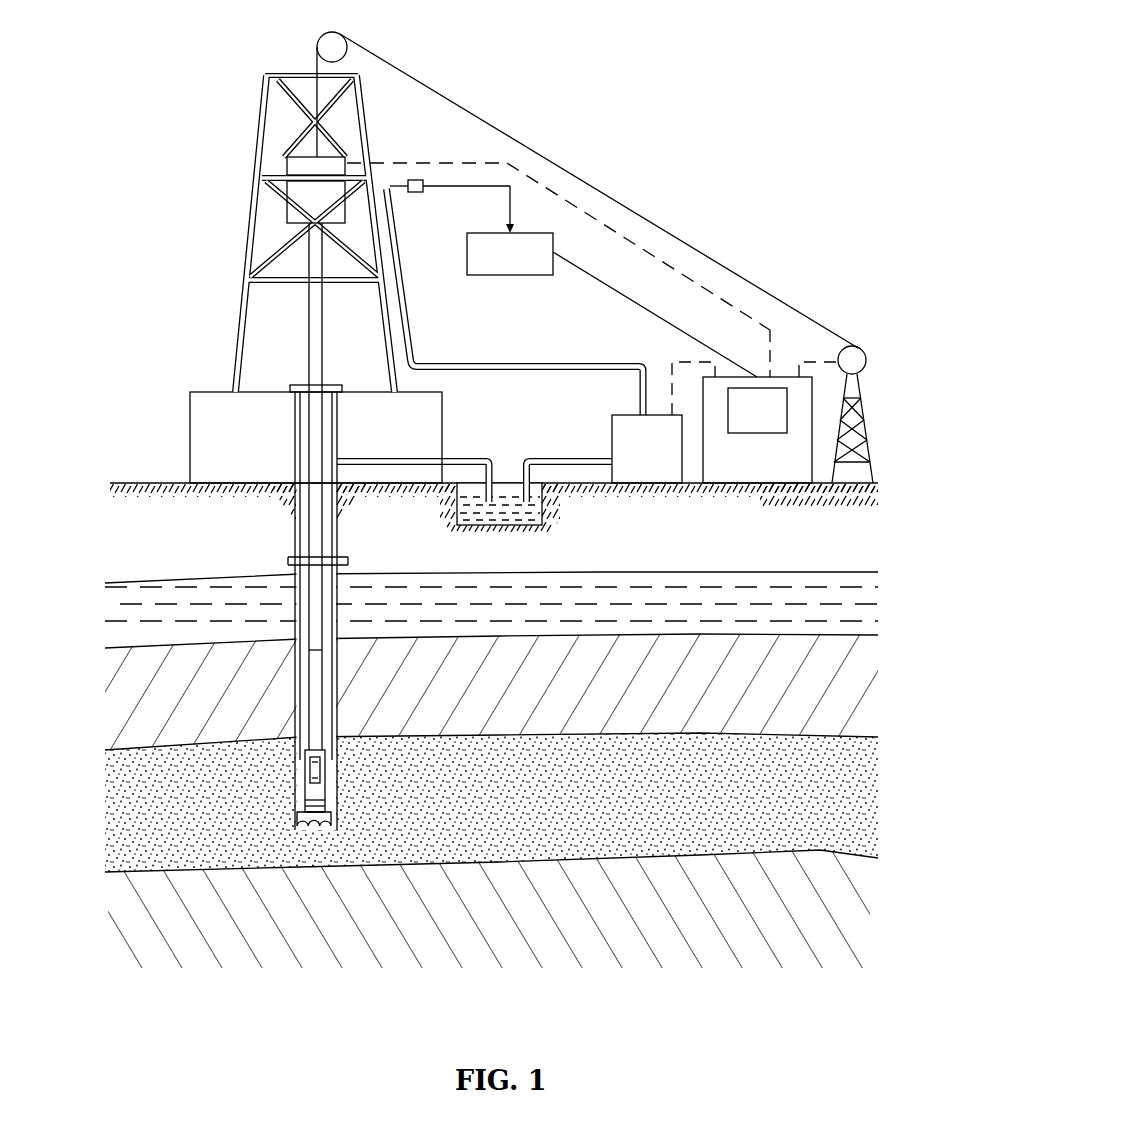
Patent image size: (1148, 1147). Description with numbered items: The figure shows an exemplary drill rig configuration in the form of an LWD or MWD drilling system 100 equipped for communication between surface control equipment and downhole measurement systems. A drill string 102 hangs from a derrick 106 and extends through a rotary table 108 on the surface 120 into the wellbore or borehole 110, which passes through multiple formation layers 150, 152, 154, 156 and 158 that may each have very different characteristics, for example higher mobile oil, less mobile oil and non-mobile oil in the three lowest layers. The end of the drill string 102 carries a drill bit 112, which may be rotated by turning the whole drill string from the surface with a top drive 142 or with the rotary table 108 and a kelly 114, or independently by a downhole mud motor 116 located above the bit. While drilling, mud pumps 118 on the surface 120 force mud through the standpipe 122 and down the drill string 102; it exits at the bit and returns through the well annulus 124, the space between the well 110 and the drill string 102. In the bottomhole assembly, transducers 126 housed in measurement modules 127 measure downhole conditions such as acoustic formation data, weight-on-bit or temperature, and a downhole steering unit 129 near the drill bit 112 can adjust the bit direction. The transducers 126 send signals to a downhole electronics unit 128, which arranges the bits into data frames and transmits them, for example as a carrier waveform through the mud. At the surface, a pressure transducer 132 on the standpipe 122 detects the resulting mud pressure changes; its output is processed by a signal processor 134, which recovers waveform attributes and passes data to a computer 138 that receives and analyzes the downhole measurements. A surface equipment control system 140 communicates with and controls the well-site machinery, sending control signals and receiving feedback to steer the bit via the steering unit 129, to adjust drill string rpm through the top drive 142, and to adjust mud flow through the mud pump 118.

The drilling system 100 is at (283, 66).
The drill string 102 is at (300, 538).
The derrick 106 is at (246, 283).
The rotary table 108 is at (338, 386).
The borehole 110 is at (337, 538).
The drill bit 112 is at (305, 833).
The kelly 114 is at (308, 341).
The downhole mud motor 116 is at (326, 800).
The mud pumps 118 is at (666, 458).
The surface 120 is at (175, 490).
The standpipe 122 is at (574, 361).
The well annulus 124 is at (307, 623).
The transducers 126 is at (302, 771).
The measurement modules 127 is at (329, 779).
The downhole electronics unit 128 is at (312, 708).
The downhole steering unit 129 is at (310, 807).
The pressure transducer 132 is at (419, 193).
The signal processor 134 is at (529, 264).
The computer 138 is at (776, 420).
The surface equipment control system 140 is at (778, 471).
The top drive 142 is at (333, 205).
The formation layer 150 is at (840, 558).
The formation layer 152 is at (840, 626).
The formation layer 154 is at (840, 723).
The formation layer 156 is at (840, 839).
The formation layer 158 is at (840, 955).